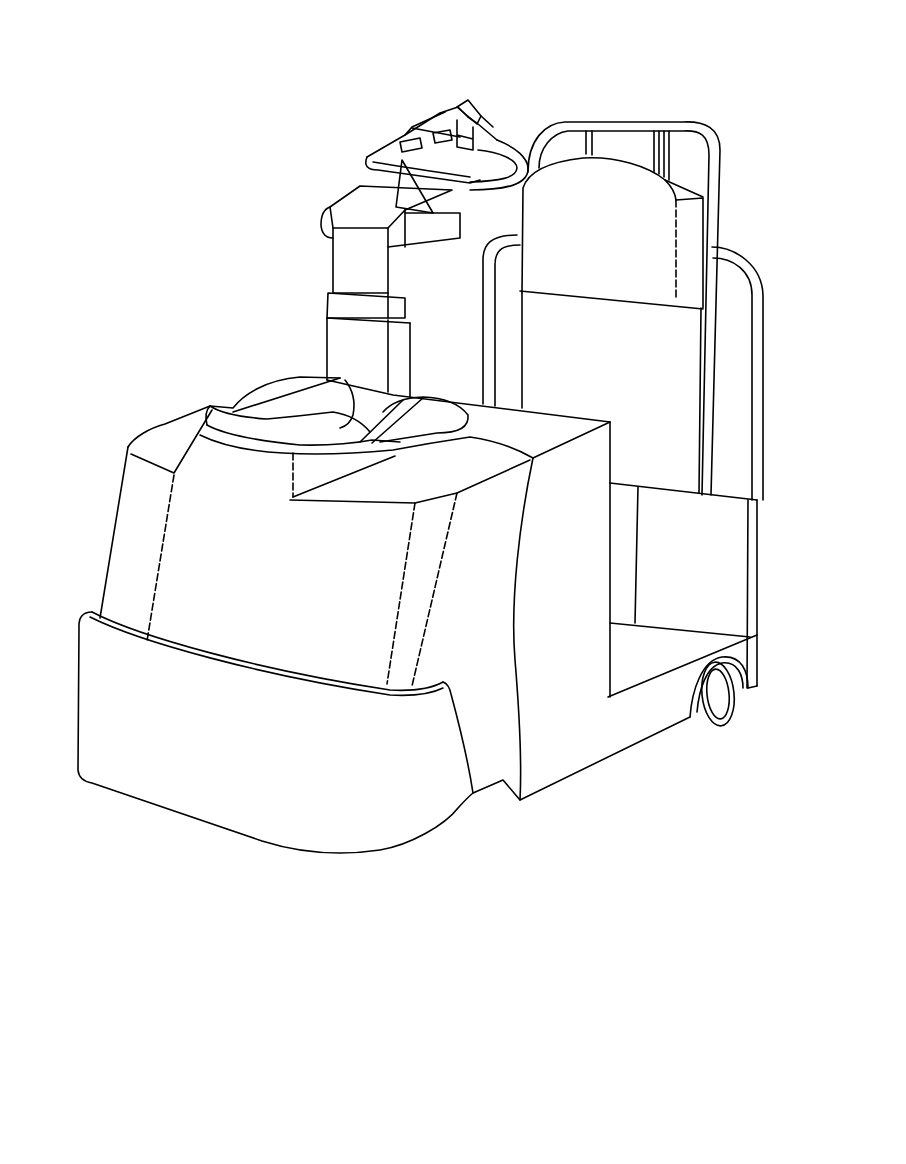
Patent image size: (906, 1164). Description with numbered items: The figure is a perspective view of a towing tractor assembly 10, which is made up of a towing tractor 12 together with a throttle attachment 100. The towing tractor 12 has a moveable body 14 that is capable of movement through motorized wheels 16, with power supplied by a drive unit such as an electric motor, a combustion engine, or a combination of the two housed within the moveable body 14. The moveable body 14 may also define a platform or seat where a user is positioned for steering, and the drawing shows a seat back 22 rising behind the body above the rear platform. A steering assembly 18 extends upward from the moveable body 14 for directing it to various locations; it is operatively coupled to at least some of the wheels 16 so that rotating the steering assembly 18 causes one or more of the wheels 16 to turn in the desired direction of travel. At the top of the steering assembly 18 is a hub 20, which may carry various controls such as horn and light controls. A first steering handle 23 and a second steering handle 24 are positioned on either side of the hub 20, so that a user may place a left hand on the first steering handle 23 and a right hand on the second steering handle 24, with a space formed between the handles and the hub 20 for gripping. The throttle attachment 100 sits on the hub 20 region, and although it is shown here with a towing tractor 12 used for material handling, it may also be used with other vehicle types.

The towing tractor assembly 10 is at (192, 111).
The towing tractor 12 is at (108, 413).
The moveable body 14 is at (110, 543).
The wheels 16 is at (715, 730).
The steering assembly 18 is at (297, 233).
The hub 20 is at (372, 165).
The seat back 22 is at (520, 190).
The first steering handle 23 is at (512, 140).
The second steering handle 24 is at (384, 140).
The throttle attachment 100 is at (470, 107).